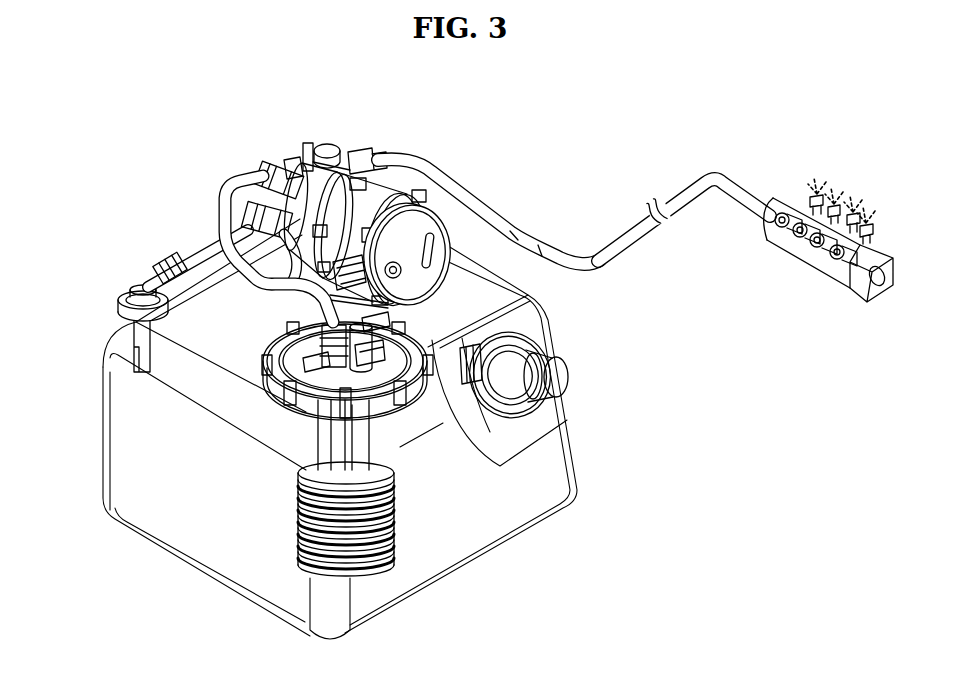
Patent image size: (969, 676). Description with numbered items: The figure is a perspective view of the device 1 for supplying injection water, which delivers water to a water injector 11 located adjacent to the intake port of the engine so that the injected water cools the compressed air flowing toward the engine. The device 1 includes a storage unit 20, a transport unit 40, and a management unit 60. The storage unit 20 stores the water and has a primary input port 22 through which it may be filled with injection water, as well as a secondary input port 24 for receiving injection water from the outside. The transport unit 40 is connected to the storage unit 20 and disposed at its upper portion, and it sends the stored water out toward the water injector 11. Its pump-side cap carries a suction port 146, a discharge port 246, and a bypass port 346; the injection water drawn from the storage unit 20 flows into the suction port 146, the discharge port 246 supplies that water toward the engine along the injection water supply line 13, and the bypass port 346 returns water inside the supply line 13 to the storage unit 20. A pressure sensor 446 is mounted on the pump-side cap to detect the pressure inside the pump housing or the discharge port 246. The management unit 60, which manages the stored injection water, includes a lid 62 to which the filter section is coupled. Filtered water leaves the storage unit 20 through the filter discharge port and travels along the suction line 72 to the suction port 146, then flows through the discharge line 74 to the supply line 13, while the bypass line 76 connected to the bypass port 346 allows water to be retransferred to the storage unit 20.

The device for supplying injection water 1 is at (357, 193).
The water injector 11 is at (813, 255).
The injection water supply line 13 is at (627, 240).
The storage unit 20 is at (580, 470).
The primary input port 22 is at (562, 375).
The secondary input port 24 is at (116, 308).
The transport unit 40 is at (357, 202).
The management unit 60 is at (296, 547).
The lid 62 is at (408, 383).
The suction line 72 is at (230, 280).
The discharge line 74 is at (470, 210).
The bypass line 76 is at (223, 207).
The suction port 146 is at (263, 164).
The discharge port 246 is at (361, 148).
The bypass port 346 is at (301, 170).
The pressure sensor 446 is at (327, 143).